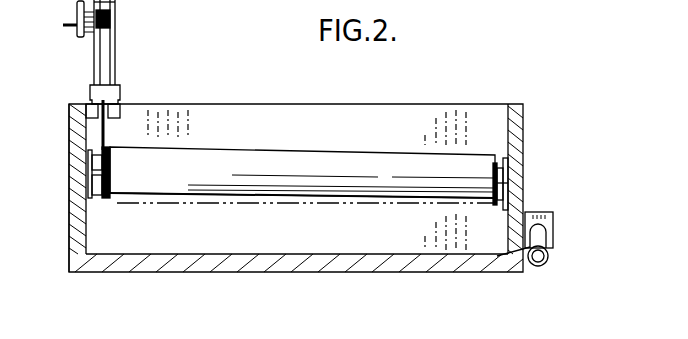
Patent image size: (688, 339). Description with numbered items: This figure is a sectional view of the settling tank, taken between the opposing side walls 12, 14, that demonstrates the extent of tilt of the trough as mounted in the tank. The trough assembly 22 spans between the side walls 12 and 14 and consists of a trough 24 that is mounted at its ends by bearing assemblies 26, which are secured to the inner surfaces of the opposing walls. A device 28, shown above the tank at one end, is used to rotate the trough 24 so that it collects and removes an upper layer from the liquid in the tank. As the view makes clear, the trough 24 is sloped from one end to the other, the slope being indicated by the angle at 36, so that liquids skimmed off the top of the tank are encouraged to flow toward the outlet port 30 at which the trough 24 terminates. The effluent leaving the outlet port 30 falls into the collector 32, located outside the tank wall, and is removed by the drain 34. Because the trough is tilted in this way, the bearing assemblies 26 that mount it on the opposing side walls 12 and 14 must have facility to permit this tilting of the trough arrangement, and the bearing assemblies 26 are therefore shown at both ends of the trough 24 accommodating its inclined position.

The side wall 12 is at (523, 107).
The side wall 14 is at (69, 145).
The trough assembly 22 is at (224, 146).
The trough 24 is at (359, 167).
The bearing assembly 26 is at (97, 203).
The rotating device 28 is at (120, 42).
The outlet port 30 is at (510, 184).
The collector 32 is at (556, 216).
The drain 34 is at (546, 240).
The angle of slope 36 is at (147, 177).